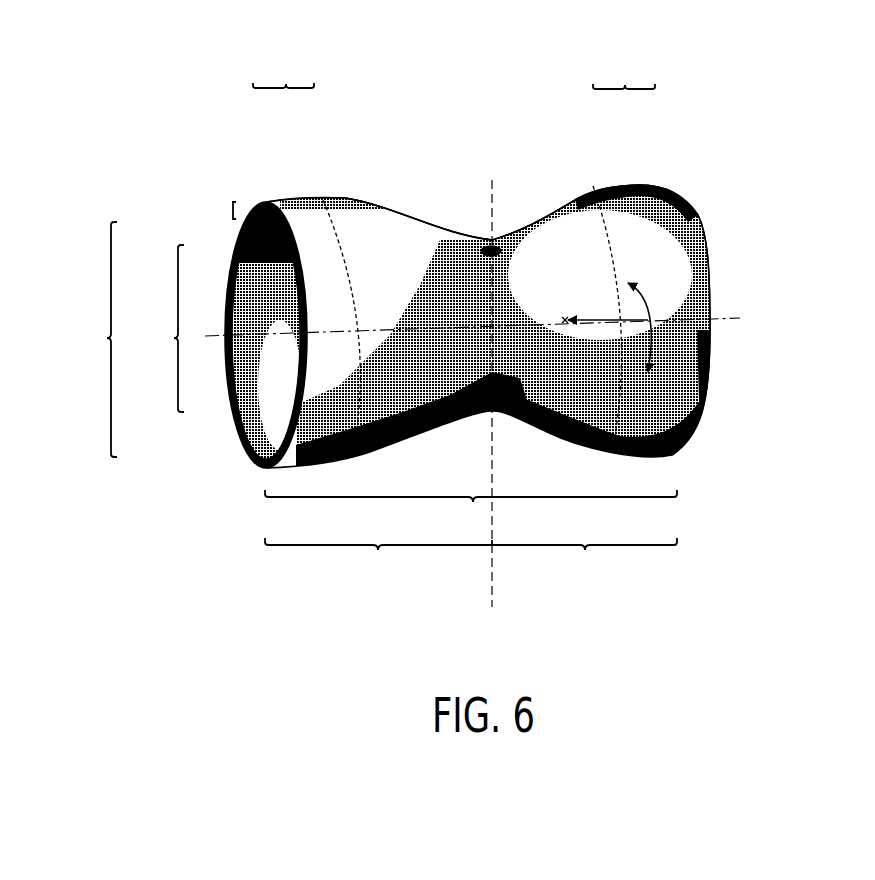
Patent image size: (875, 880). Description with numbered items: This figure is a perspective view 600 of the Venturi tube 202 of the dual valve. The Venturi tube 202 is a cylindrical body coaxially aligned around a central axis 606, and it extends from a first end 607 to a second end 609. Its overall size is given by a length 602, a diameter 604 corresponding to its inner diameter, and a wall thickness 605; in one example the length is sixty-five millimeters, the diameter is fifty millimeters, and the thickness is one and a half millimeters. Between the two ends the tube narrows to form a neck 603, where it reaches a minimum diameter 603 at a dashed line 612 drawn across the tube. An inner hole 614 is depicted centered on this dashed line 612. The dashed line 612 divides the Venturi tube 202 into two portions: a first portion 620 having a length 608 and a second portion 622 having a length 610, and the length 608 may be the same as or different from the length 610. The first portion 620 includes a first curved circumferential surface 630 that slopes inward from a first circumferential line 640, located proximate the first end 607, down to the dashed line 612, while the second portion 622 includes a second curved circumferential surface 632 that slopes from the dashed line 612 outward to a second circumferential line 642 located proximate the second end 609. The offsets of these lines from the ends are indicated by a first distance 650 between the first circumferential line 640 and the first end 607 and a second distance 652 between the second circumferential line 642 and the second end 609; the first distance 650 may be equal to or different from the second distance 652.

The perspective view 600 is at (781, 68).
The Venturi tube 202 is at (689, 143).
The length 602 is at (472, 500).
The neck / minimum diameter 603 is at (178, 338).
The diameter 604 is at (111, 338).
The thickness 605 is at (229, 209).
The central axis 606 is at (713, 317).
The first end 607 is at (263, 188).
The length 608 is at (378, 547).
The second end 609 is at (693, 190).
The length 610 is at (585, 547).
The dashed line 612 is at (493, 437).
The inner hole 614 is at (483, 248).
The first portion 620 is at (407, 140).
The second portion 622 is at (571, 136).
The first curved circumferential surface 630 is at (387, 213).
The second curved circumferential surface 632 is at (537, 213).
The first circumferential line 640 is at (323, 202).
The second circumferential line 642 is at (593, 192).
The first distance 650 is at (286, 84).
The second distance 652 is at (625, 86).